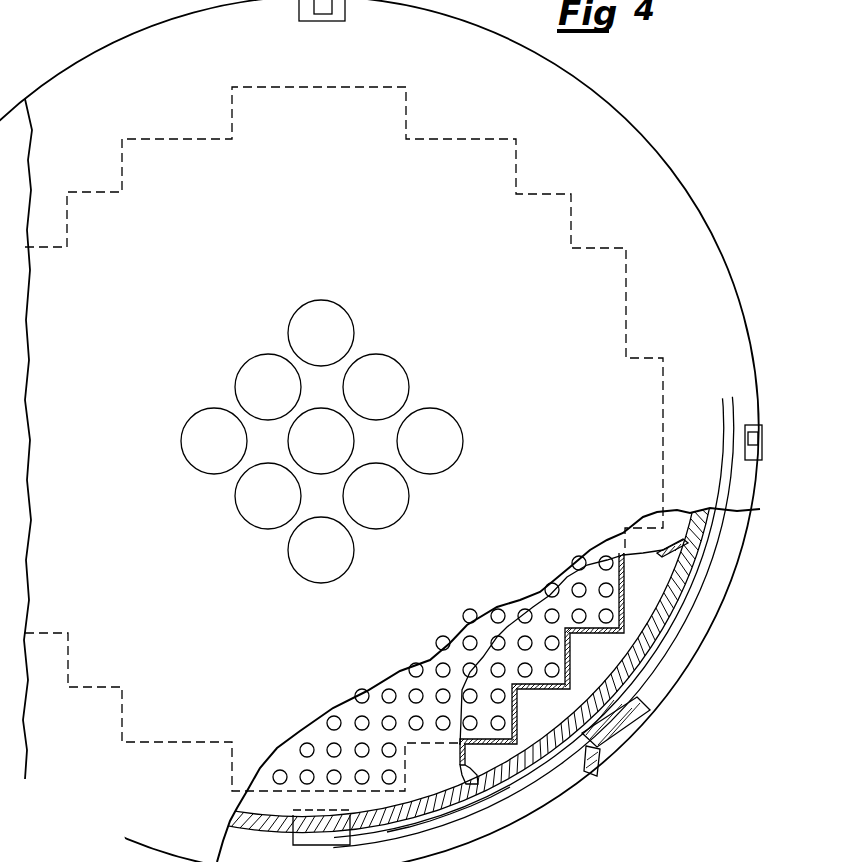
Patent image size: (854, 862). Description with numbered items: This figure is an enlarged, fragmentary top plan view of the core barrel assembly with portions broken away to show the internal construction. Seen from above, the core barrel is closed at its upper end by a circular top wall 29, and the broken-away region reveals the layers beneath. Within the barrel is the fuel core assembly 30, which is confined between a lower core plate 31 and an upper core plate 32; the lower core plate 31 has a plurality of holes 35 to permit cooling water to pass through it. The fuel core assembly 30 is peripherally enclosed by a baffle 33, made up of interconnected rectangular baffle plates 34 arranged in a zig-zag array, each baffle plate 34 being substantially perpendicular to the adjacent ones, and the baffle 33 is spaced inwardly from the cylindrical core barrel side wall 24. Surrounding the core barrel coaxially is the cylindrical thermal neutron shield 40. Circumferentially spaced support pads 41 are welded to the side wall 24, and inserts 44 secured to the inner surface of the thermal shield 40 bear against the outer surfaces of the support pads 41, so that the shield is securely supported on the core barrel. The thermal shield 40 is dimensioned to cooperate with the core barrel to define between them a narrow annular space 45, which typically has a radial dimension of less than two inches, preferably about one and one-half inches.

The top wall 29 is at (657, 162).
The side wall 24 is at (697, 562).
The fuel core assembly 30 is at (606, 604).
The lower core plate 31 is at (538, 675).
The upper core plate 32 is at (690, 532).
The baffle 33 is at (578, 652).
The baffle plates 34 is at (500, 738).
The holes 35 is at (390, 694).
The thermal neutron shield 40 is at (697, 644).
The support pads 41 is at (603, 753).
The inserts 44 is at (623, 733).
The annular space 45 is at (505, 793).